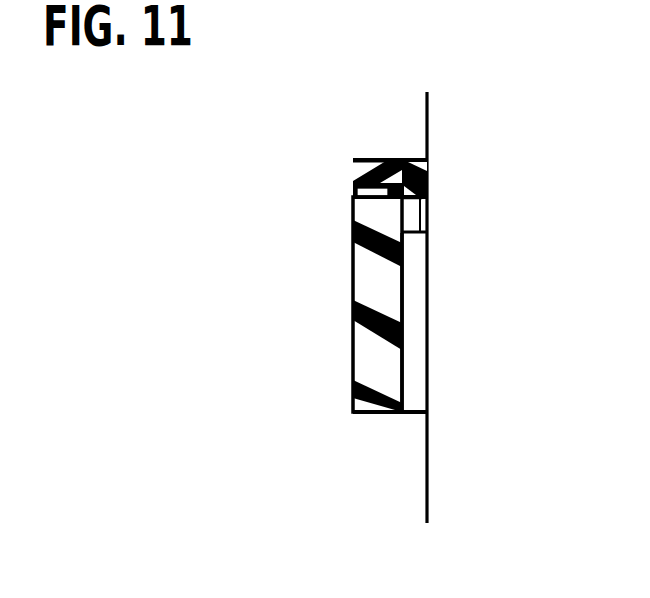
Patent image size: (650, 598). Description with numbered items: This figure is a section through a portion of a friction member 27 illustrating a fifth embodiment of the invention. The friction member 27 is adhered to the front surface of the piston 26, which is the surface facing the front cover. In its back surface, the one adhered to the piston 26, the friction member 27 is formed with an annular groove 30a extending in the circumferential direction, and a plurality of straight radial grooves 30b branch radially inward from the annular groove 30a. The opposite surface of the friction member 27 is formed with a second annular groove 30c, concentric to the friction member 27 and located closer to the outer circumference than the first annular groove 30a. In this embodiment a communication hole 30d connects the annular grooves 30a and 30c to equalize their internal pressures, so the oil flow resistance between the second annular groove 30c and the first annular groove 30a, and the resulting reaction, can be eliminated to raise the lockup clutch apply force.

The piston 26 is at (427, 500).
The friction member 27 is at (353, 407).
The annular groove 30a is at (421, 225).
The radial grooves 30b is at (421, 363).
The second annular groove 30c is at (365, 190).
The communication hole 30d is at (427, 167).